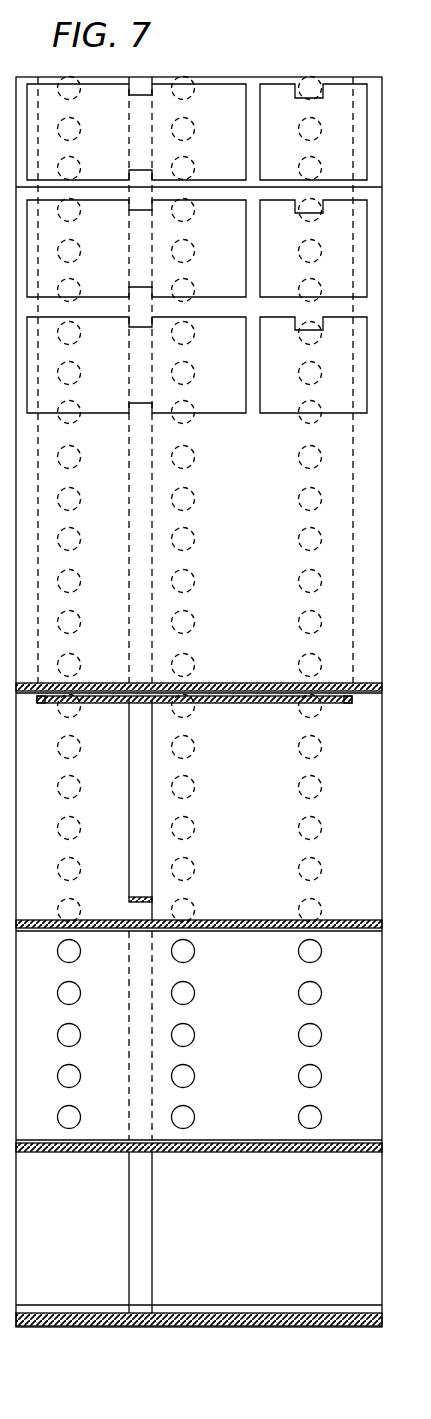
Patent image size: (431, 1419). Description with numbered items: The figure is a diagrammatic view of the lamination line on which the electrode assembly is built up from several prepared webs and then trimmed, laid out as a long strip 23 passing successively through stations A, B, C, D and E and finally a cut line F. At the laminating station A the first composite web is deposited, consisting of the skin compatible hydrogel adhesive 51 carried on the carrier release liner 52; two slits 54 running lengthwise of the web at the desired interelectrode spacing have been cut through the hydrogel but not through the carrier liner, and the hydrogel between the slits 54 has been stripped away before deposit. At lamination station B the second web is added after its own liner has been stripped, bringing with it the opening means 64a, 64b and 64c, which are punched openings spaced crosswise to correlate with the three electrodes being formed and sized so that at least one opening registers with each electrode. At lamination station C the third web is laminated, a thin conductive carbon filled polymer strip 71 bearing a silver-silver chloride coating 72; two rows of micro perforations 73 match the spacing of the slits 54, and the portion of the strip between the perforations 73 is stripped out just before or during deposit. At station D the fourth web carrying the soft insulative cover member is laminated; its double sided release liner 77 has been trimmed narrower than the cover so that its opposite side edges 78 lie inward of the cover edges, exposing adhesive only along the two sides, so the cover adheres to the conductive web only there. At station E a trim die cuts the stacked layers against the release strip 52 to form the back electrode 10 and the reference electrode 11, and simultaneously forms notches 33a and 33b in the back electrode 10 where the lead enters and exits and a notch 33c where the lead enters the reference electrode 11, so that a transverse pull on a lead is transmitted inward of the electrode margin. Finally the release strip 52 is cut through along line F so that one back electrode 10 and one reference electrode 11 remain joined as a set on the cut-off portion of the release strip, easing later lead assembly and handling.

The back electrode 10 is at (115, 361).
The reference electrode 11 is at (291, 394).
The strip of sheet material 23 is at (223, 702).
The notch 33a is at (131, 92).
The notch 33b is at (132, 172).
The notch 33c is at (301, 88).
The hydrogel adhesive 51 is at (220, 1305).
The carrier release liner 52 is at (283, 1312).
The slits 54 is at (131, 1212).
The opening means 64a is at (97, 1060).
The opening means 64b is at (196, 1076).
The opening means 64c is at (299, 1073).
The conductive carbon filled polymer strip 71 is at (269, 920).
The silver-silver chloride coating 72 is at (221, 931).
The micro perforations 73 is at (153, 900).
The release liner 77 is at (222, 704).
The side edges of release liner 78 is at (37, 703).
The laminating station A is at (383, 1312).
The lamination station B is at (383, 1142).
The lamination station C is at (383, 925).
The lamination station D is at (383, 690).
The trimming station E is at (383, 362).
The cut line F is at (383, 188).